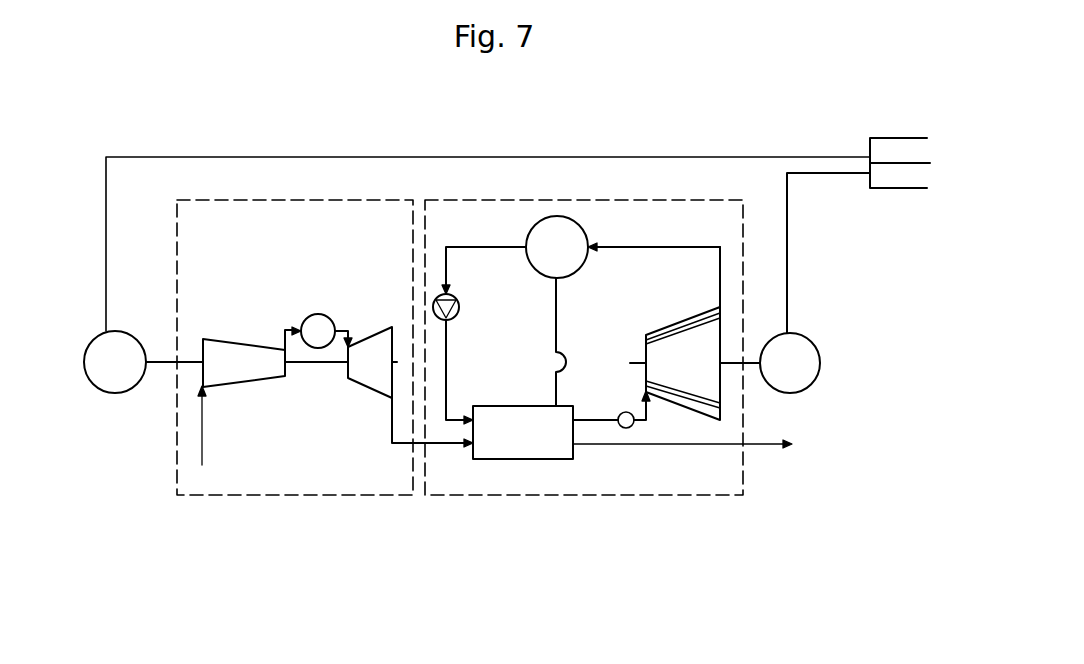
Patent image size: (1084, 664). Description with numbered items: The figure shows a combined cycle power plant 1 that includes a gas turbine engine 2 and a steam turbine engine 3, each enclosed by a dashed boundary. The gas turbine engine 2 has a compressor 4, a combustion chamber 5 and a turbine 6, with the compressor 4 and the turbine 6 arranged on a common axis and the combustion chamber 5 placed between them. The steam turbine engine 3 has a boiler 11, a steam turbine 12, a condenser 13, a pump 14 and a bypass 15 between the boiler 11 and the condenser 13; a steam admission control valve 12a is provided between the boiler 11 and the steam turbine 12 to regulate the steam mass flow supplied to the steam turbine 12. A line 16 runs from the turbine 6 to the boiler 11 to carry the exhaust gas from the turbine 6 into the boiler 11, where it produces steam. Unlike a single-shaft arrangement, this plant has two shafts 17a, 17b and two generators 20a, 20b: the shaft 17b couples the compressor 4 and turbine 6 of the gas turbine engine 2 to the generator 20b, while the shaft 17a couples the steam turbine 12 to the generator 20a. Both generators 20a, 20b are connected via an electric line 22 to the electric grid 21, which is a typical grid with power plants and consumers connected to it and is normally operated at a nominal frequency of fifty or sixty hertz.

The combined cycle power plant 1 is at (236, 124).
The gas turbine engine 2 is at (373, 200).
The steam turbine engine 3 is at (658, 198).
The compressor 4 is at (233, 343).
The combustion chamber 5 is at (307, 313).
The turbine 6 is at (377, 333).
The boiler 11 is at (513, 448).
The steam turbine 12 is at (677, 322).
The steam admission control valve 12a is at (630, 428).
The condenser 13 is at (552, 243).
The pump 14 is at (459, 308).
The bypass 15 is at (557, 300).
The line 16 is at (388, 423).
The shaft 17a is at (753, 365).
The shaft 17b is at (160, 363).
The generator 20a is at (807, 390).
The generator 20b is at (98, 392).
The electric grid 21 is at (906, 216).
The electric line 22 is at (827, 173).